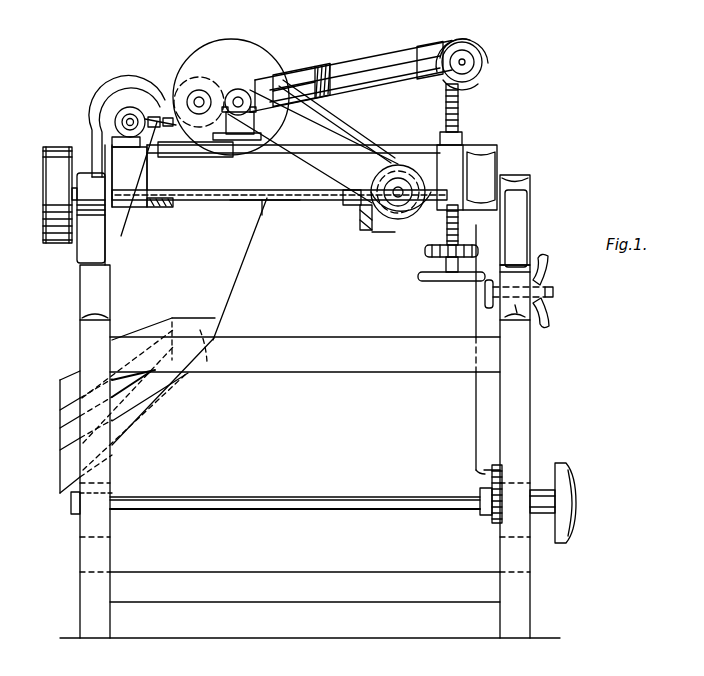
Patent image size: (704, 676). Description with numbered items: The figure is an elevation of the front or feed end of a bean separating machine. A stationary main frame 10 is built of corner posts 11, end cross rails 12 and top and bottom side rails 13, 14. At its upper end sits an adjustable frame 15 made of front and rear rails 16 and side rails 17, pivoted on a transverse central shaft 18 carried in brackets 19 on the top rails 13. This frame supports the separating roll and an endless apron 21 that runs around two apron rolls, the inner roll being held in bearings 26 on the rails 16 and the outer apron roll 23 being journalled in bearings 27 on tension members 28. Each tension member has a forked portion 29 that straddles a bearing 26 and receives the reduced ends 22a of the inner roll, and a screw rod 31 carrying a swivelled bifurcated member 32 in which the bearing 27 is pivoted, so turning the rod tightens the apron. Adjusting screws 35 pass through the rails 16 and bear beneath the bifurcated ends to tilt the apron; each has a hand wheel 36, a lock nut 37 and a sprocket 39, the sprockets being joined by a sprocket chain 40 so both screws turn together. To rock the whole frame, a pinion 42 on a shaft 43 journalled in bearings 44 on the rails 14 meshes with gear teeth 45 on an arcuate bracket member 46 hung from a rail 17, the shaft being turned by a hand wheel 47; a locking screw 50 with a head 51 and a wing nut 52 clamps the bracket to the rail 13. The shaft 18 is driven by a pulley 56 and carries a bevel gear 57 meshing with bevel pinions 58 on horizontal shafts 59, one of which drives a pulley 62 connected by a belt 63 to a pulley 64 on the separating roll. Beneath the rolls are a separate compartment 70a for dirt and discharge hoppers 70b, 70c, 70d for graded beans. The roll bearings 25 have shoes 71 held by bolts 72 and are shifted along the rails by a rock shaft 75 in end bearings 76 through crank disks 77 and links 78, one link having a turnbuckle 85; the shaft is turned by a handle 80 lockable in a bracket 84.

The main frame 10 is at (310, 620).
The corner posts 11 is at (85, 338).
The end cross rails 12 is at (328, 364).
The top side rails 13 is at (563, 328).
The bottom side rails 14 is at (103, 538).
The adjustable frame 15 is at (318, 198).
The front and rear rails 16 is at (293, 167).
The side rails 17 is at (304, 177).
The transverse central shaft 18 is at (270, 203).
The brackets 19 is at (303, 206).
The endless apron 21 is at (410, 52).
The reduced ends of the roll 22a is at (238, 93).
The apron roll 23 is at (480, 78).
The bearings 25 is at (163, 102).
The bearings 26 is at (252, 128).
The bearings 27 is at (475, 62).
The tension members 28 is at (376, 66).
The forked portions 29 is at (270, 82).
The screw rod 31 is at (337, 76).
The bifurcated member 32 is at (470, 42).
The adjusting screws 35 is at (460, 116).
The hand wheel 36 is at (440, 281).
The lock nut 37 is at (463, 138).
The sprocket 39 is at (428, 251).
The sprocket chain 40 is at (442, 264).
The pinion 42 is at (488, 490).
The shaft 43 is at (358, 510).
The bearings 44 is at (72, 518).
The gear teeth 45 is at (502, 472).
The arcuate bracket member 46 is at (490, 393).
The hand wheel 47 is at (578, 527).
The locking screw 50 is at (554, 293).
The head 51 is at (487, 298).
The wing nut 52 is at (550, 268).
The pulley 56 is at (52, 172).
The bevel gear 57 is at (364, 232).
The bevel pinions 58 is at (410, 222).
The horizontal shafts 59 is at (395, 190).
The pulley 62 is at (350, 208).
The belt 63 is at (250, 202).
The pulley 64 is at (196, 80).
The separate compartment 70a is at (240, 272).
The discharge hopper 70b is at (64, 430).
The discharge hopper 70c is at (68, 470).
The discharge hopper 70d is at (68, 490).
The shoe 71 is at (172, 154).
The bolt 72 is at (168, 204).
The rock shaft 75 is at (127, 122).
The end bearings 76 is at (123, 144).
The crank disk 77 is at (123, 117).
The link 78 is at (121, 108).
The handle 80 is at (160, 110).
The bracket 84 is at (92, 134).
The turnbuckle 85 is at (139, 184).